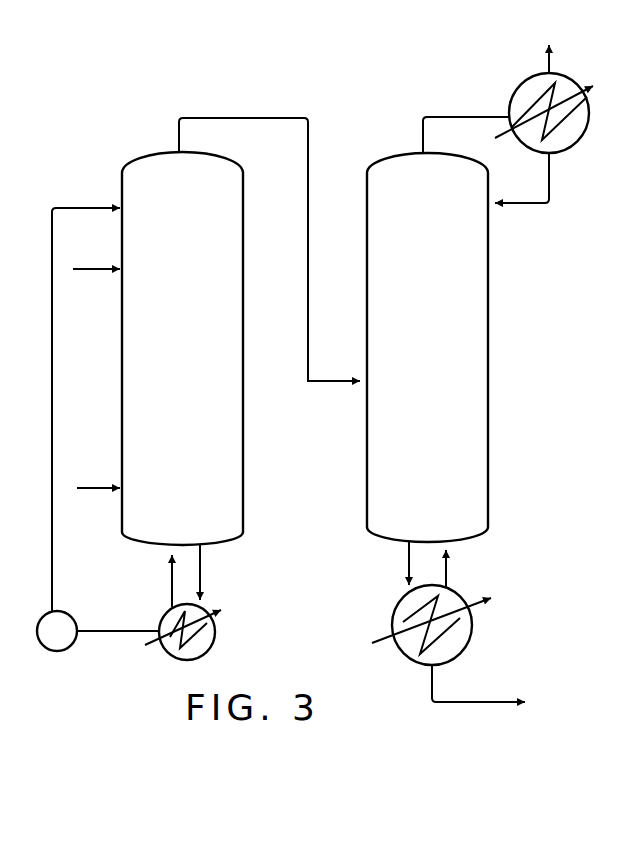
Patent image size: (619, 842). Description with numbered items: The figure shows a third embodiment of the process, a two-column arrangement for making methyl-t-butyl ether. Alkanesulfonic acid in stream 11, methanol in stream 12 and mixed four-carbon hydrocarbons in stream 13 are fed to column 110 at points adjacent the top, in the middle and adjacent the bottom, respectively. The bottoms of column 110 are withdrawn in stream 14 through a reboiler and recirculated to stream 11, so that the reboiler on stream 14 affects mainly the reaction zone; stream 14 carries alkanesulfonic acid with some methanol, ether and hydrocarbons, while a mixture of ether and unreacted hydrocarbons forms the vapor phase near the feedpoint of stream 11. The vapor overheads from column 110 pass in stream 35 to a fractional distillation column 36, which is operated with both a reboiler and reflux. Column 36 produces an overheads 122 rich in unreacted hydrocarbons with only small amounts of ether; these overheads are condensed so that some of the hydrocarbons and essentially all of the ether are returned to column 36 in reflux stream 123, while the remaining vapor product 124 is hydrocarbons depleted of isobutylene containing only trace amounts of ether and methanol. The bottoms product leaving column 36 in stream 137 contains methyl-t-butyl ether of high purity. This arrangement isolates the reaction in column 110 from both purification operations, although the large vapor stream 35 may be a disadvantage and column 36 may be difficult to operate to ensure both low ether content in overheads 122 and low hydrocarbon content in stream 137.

The column 110 is at (140, 162).
The fractional distillation column 36 is at (478, 357).
The stream 11 is at (80, 207).
The stream 12 is at (83, 269).
The stream 13 is at (93, 488).
The stream 14 is at (118, 630).
The stream 35 is at (210, 118).
The overheads 122 is at (478, 114).
The vapor product 124 is at (545, 62).
The reflux stream 123 is at (518, 208).
The stream 137 is at (465, 702).